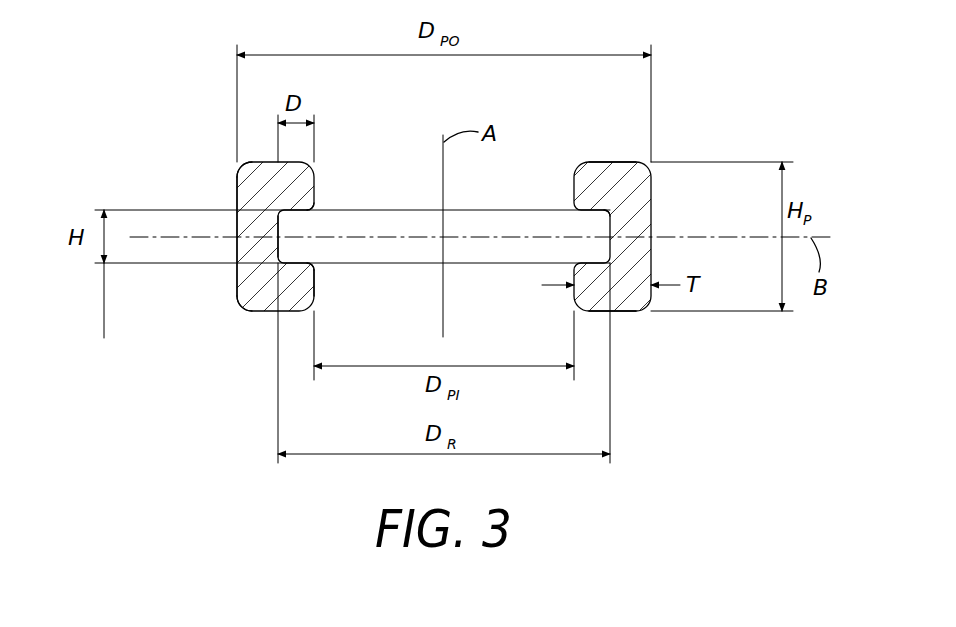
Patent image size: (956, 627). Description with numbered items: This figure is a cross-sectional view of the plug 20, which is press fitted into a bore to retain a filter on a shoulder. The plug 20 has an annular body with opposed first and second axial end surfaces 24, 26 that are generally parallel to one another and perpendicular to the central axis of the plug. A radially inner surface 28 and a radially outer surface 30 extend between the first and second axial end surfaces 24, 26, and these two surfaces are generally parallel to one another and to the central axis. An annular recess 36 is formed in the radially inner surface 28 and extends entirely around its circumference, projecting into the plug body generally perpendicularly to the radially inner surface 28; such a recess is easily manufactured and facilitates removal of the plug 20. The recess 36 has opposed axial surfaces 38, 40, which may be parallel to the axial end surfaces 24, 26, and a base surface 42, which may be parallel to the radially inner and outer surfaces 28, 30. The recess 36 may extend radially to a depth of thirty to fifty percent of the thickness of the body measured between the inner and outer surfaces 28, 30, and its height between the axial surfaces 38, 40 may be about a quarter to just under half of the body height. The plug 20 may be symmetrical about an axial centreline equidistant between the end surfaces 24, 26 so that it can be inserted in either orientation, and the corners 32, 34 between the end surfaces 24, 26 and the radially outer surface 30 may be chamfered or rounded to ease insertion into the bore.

The plug 20 is at (706, 103).
The first axial end surface 24 is at (610, 162).
The second axial end surface 26 is at (622, 311).
The radially inner surface 28 is at (315, 295).
The radially outer surface 30 is at (237, 278).
The corner 32 is at (240, 170).
The corner 34 is at (242, 303).
The annular recess 36 is at (612, 213).
The axial surface 38 is at (300, 212).
The axial surface 40 is at (306, 262).
The base surface 42 is at (278, 216).